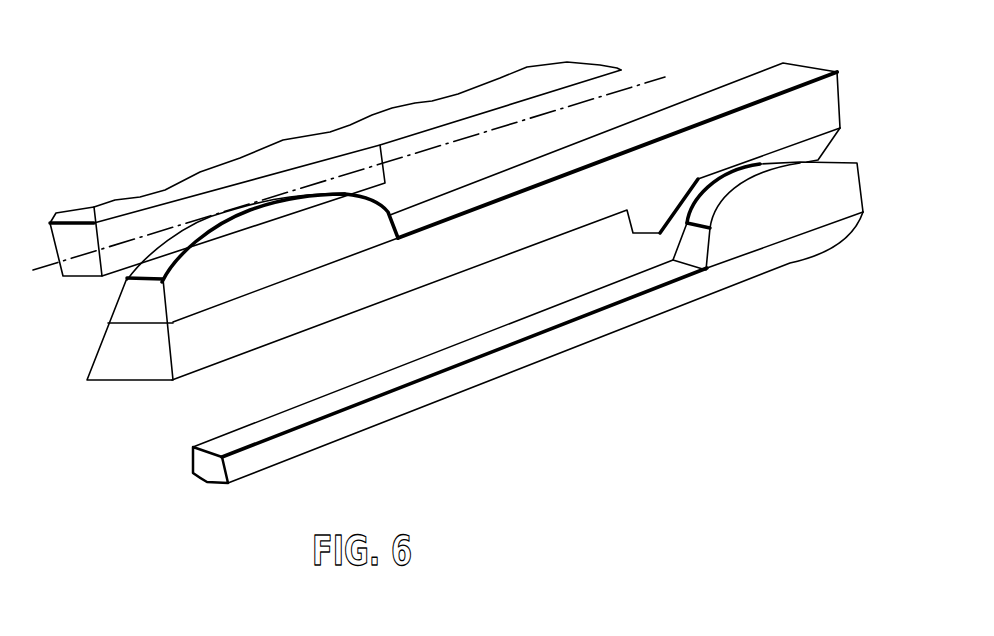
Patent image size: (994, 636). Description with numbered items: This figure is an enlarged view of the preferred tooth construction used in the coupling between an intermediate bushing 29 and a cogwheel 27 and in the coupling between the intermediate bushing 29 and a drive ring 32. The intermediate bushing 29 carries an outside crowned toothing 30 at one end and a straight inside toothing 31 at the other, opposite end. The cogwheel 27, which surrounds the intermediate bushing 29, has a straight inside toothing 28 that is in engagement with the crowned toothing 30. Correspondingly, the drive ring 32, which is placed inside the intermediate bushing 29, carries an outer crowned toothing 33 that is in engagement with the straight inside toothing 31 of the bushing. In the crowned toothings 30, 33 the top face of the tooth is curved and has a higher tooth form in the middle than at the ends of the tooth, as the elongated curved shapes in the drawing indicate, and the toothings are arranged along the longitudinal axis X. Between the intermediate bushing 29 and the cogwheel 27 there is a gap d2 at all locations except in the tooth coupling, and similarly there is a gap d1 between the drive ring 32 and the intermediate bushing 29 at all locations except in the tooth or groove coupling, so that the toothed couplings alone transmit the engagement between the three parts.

The cogwheel 27 is at (245, 170).
The straight toothing 28 is at (115, 261).
The intermediate bushing 29 is at (240, 323).
The crowned toothing 30 is at (137, 303).
The straight inside toothing 31 is at (815, 147).
The drive ring 32 is at (680, 288).
The crowned toothing 33 is at (843, 183).
The longitudinal axis X is at (648, 78).
The gap d1 is at (600, 253).
The gap d2 is at (490, 143).